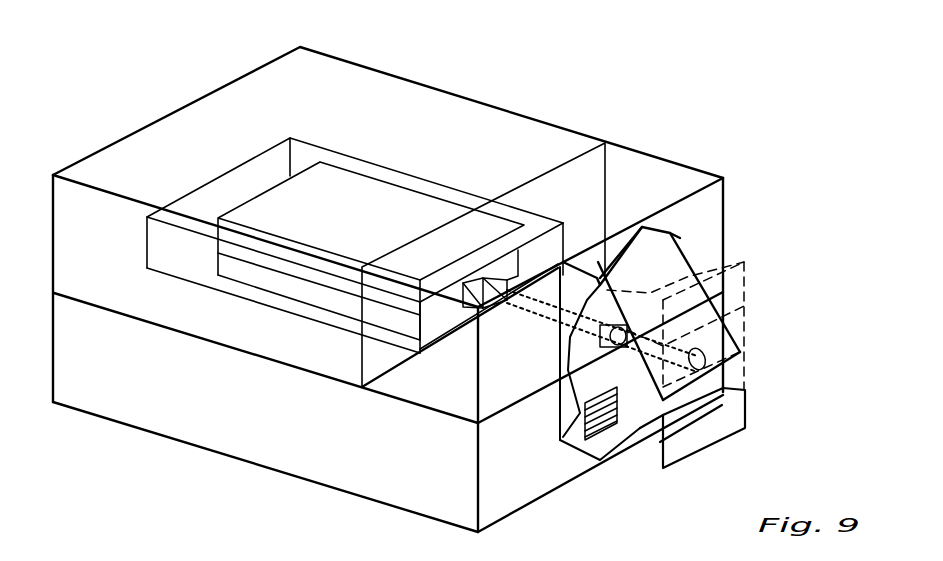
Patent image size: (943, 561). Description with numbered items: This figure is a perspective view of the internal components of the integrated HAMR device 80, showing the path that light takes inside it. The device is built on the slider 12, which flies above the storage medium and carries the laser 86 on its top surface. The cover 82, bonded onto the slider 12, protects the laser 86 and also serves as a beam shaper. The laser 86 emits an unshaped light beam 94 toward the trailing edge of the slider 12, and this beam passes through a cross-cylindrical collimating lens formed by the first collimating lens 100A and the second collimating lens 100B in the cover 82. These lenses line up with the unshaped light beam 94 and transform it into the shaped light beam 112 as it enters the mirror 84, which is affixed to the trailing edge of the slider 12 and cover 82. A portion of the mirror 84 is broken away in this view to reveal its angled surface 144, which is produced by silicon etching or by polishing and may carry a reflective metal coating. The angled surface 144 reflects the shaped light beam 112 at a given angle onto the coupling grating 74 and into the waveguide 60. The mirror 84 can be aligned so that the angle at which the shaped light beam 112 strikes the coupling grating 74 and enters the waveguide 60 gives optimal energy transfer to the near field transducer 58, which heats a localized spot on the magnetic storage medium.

The slider 12 is at (133, 407).
The integrated HAMR device 80 is at (388, 159).
The cover 82 is at (168, 140).
The laser 86 is at (367, 186).
The unshaped light beam 94 is at (485, 300).
The first collimating lens 100A is at (500, 282).
The second collimating lens 100B is at (600, 340).
The shaped light beam 112 is at (723, 236).
The angled surface 144 is at (722, 332).
The mirror 84 is at (703, 437).
The near field transducer 58 is at (602, 445).
The waveguide 60 is at (617, 385).
The coupling grating 74 is at (560, 440).